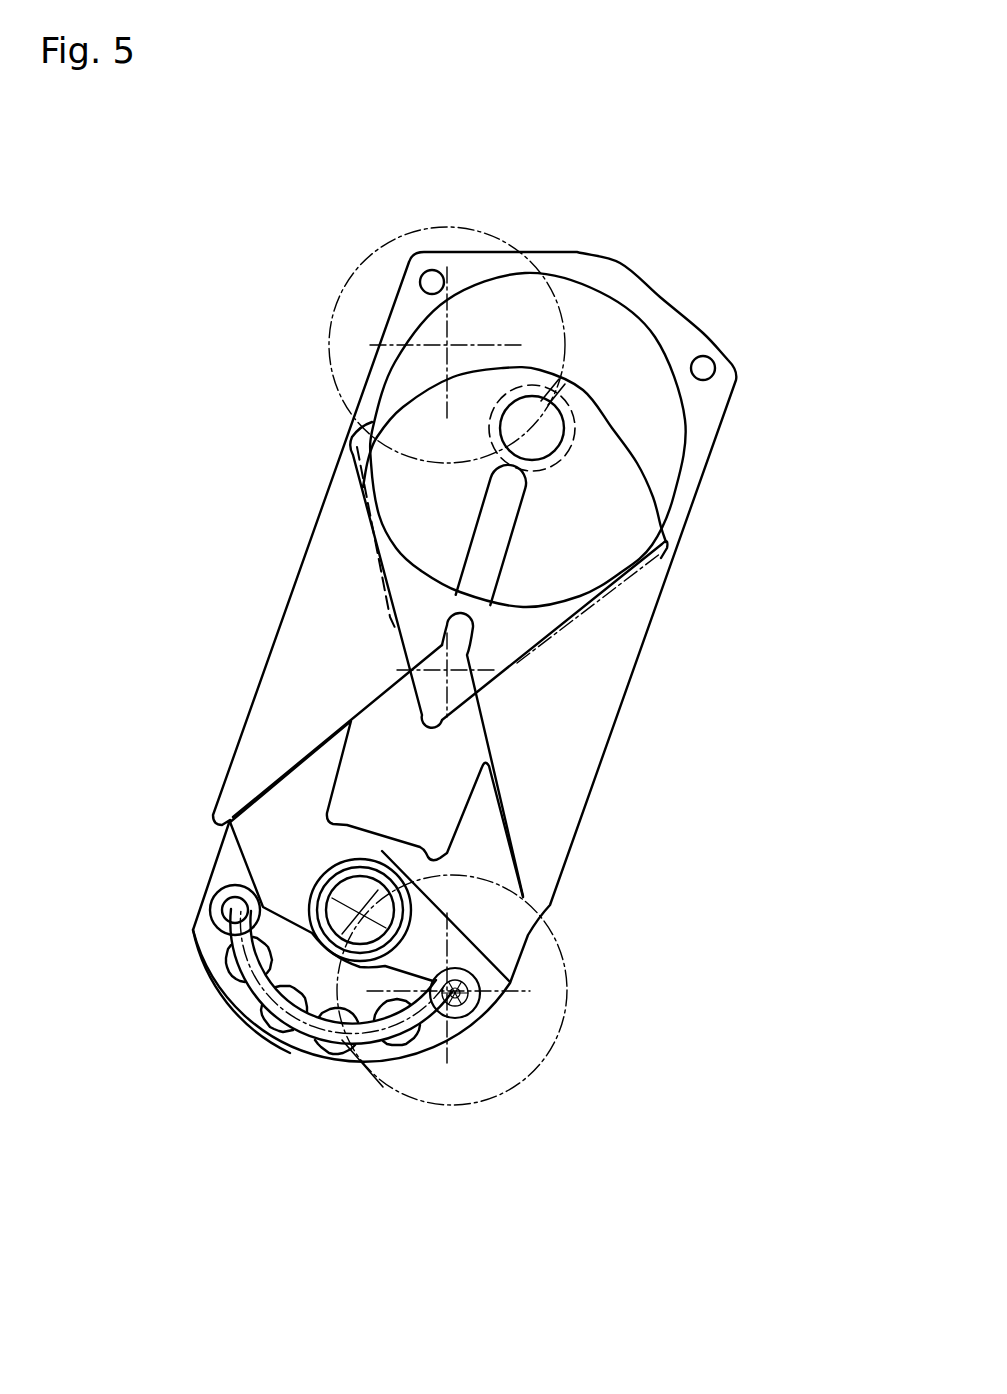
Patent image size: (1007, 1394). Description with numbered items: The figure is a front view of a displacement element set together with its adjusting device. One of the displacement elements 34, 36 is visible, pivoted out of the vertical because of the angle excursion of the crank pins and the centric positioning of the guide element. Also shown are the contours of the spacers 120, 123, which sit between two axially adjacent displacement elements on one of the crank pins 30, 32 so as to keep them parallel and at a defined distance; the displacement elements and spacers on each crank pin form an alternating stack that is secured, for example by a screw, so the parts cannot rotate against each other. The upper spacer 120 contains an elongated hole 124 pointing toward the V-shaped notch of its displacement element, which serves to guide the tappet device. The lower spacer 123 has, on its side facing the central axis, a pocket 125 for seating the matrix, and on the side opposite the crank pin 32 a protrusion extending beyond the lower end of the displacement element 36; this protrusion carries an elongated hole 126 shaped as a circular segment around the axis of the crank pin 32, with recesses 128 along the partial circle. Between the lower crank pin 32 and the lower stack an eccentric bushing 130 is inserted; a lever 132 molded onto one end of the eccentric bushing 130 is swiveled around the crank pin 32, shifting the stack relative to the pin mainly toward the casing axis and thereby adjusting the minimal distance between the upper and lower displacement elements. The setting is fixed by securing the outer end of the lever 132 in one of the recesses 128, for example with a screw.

The crank pin 30 is at (527, 412).
The crank pin 32 is at (333, 900).
The displacement element 34 is at (490, 716).
The displacement element 36 is at (385, 578).
The upper spacer 120 is at (727, 458).
The lower spacer 123 is at (175, 1038).
The elongated hole 124 is at (492, 538).
The pocket 125 is at (415, 800).
The elongated hole 126 is at (277, 1003).
The recesses 128 is at (350, 1047).
The eccentric bushing 130 is at (373, 873).
The lever 132 is at (425, 921).